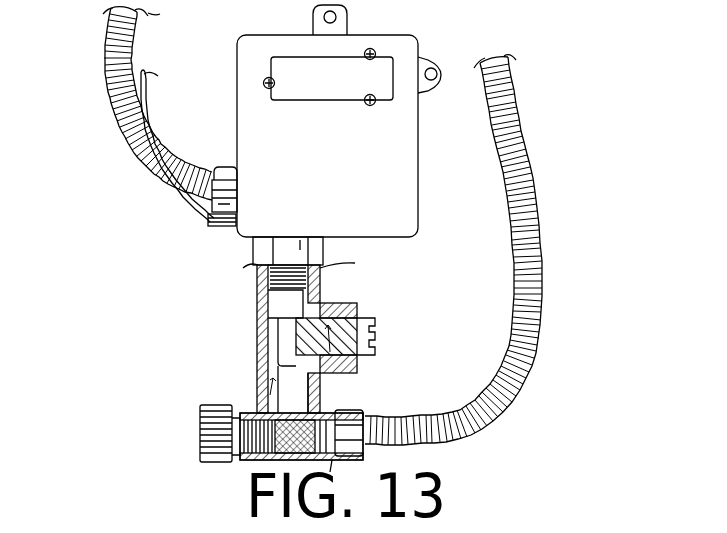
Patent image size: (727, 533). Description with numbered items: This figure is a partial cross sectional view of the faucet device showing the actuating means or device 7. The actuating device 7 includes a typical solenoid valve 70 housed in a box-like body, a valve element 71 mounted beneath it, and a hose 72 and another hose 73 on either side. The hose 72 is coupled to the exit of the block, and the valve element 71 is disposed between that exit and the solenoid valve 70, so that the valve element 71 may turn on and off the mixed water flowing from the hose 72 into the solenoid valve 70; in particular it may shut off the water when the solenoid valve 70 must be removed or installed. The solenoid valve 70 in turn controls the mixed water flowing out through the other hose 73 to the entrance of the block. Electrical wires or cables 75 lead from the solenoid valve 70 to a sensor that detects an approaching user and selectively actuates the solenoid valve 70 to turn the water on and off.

The actuating device 7 is at (328, 238).
The solenoid valve 70 is at (395, 190).
The valve element 71 is at (246, 334).
The hose 72 is at (545, 252).
The hose 73 is at (117, 80).
The electrical wires or cables 75 is at (183, 212).